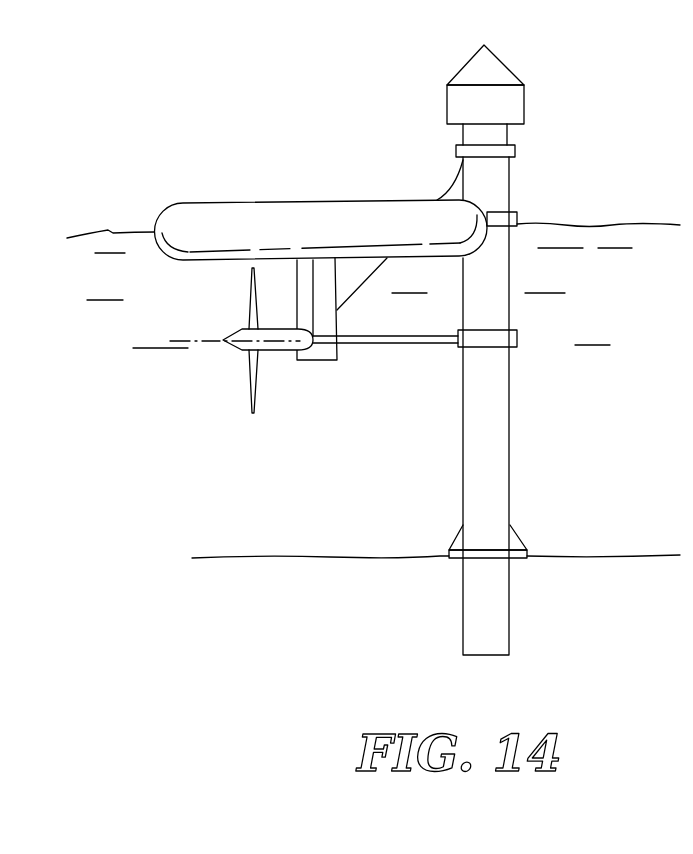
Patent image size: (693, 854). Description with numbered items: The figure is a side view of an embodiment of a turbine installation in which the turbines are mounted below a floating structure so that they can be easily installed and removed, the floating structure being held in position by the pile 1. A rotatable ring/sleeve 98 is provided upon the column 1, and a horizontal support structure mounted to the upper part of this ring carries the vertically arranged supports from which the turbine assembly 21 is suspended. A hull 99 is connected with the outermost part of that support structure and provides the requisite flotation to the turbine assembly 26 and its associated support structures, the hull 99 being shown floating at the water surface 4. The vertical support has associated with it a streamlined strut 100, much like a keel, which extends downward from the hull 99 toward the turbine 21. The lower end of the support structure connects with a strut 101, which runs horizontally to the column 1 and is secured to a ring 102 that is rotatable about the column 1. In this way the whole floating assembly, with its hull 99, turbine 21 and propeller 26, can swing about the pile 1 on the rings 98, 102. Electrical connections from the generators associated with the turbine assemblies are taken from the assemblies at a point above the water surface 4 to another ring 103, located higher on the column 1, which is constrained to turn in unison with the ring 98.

The pile 1 is at (505, 480).
The water surface 4 is at (612, 225).
The turbine assembly 21 is at (279, 382).
The turbine assembly 26 is at (232, 366).
The rotatable ring/sleeve 98 is at (517, 217).
The hull 99 is at (338, 215).
The strut 100 is at (322, 289).
The strut 101 is at (392, 352).
The ring 102 is at (517, 338).
The ring 103 is at (515, 150).